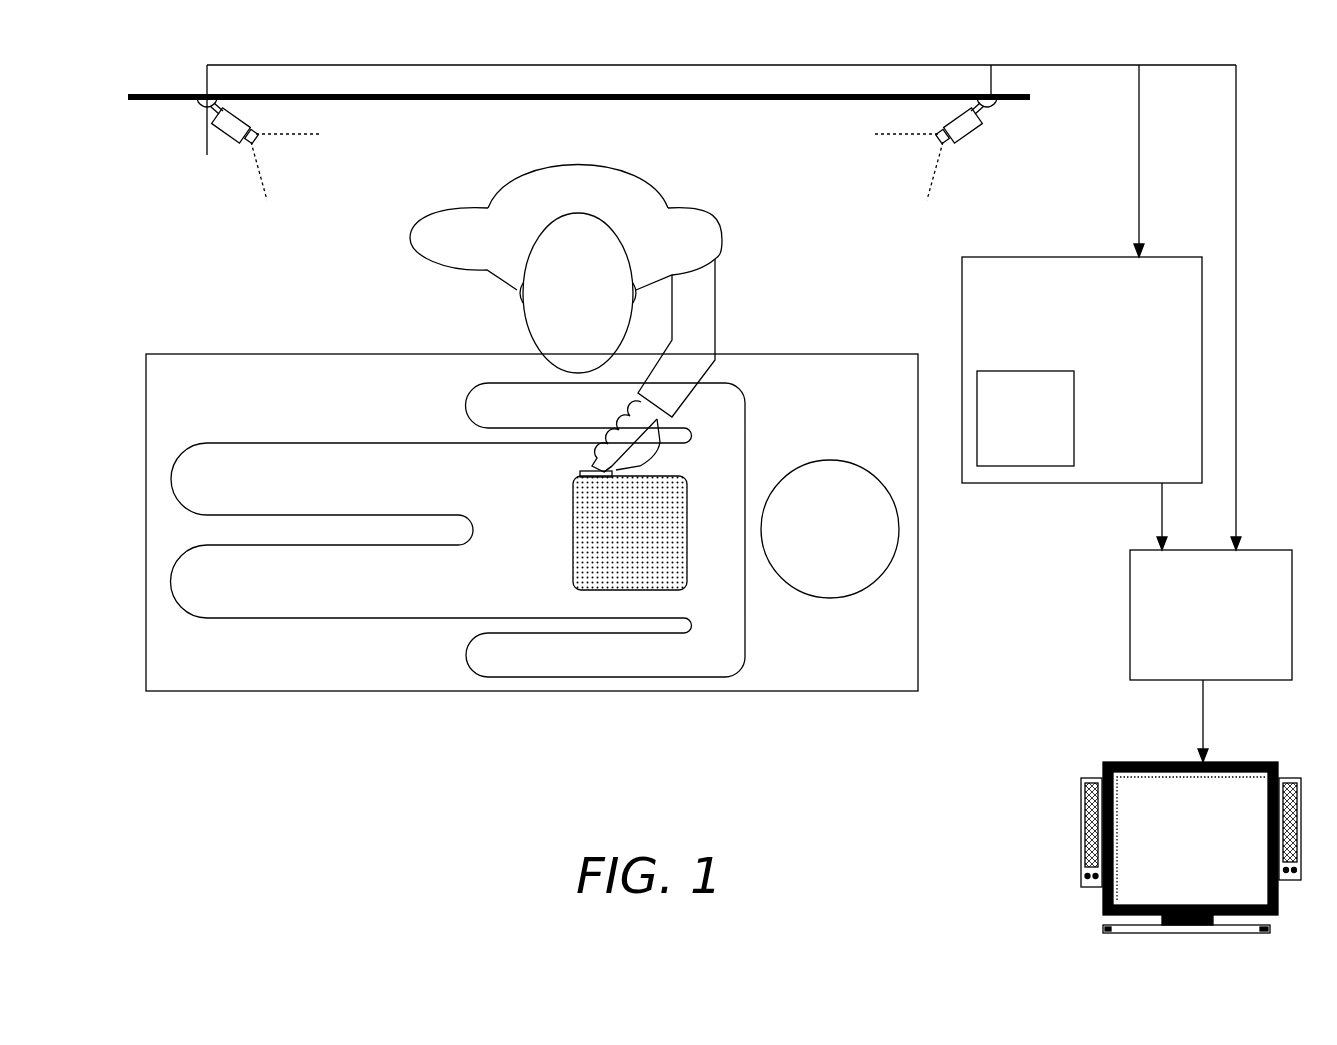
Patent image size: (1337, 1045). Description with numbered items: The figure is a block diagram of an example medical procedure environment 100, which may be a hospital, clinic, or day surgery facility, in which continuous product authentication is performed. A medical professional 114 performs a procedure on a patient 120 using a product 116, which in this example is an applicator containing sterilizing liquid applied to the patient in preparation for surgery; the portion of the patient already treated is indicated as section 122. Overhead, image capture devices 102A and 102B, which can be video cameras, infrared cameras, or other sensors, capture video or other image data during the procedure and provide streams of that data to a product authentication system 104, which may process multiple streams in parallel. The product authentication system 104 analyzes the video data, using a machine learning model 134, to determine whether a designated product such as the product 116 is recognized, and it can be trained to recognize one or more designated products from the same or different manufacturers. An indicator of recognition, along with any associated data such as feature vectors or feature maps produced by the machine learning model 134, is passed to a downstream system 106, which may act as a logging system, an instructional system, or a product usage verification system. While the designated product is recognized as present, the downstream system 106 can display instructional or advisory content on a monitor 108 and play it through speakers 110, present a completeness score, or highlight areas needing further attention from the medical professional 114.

The medical procedure environment 100 is at (1244, 78).
The image capture device 102A is at (230, 137).
The image capture device 102B is at (975, 137).
The product authentication system 104 is at (1082, 357).
The downstream system 106 is at (1130, 652).
The monitor 108 is at (1180, 762).
The speakers 110 is at (1092, 778).
The medical professional 114 is at (623, 190).
The product 116 is at (597, 470).
The patient 120 is at (724, 388).
The section 122 is at (685, 525).
The machine learning model 134 is at (1007, 452).